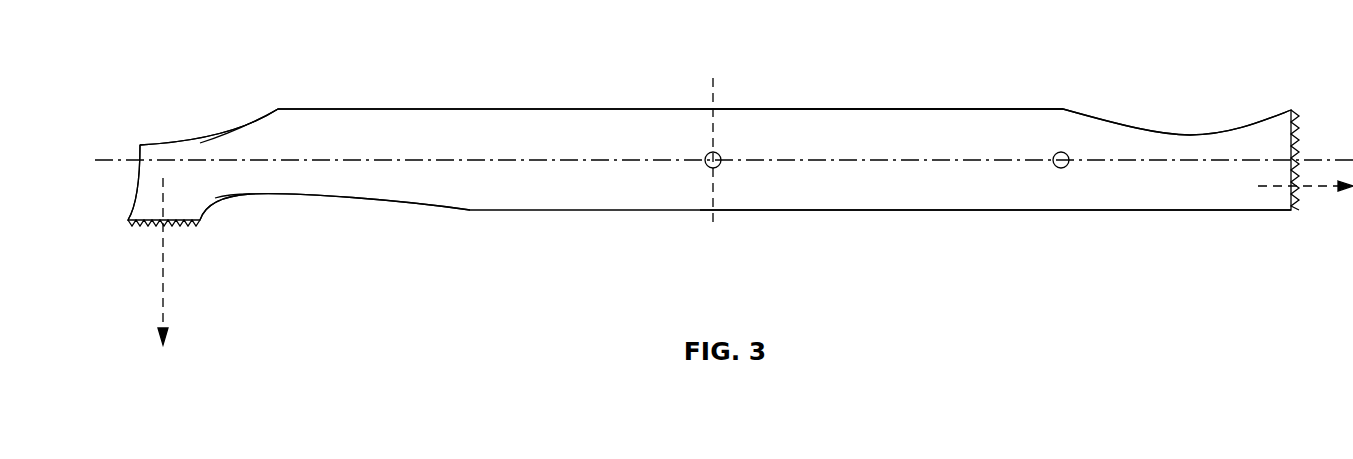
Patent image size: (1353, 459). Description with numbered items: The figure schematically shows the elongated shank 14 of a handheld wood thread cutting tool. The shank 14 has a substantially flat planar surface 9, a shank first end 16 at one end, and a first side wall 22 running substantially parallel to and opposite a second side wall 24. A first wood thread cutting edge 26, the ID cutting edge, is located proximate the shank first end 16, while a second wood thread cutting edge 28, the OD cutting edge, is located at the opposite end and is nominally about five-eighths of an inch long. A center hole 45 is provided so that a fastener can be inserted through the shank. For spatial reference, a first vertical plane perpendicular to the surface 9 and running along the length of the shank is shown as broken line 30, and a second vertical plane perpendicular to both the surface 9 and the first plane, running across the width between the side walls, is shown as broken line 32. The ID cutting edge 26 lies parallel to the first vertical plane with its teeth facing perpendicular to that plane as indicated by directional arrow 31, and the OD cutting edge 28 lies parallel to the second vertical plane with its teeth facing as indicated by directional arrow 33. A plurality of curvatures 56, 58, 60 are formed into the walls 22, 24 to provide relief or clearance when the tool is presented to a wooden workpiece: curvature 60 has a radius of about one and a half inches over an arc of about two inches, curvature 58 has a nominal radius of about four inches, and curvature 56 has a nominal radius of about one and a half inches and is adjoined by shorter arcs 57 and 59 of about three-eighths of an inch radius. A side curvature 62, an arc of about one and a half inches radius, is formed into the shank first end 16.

The planar surface 9 is at (553, 194).
The elongated shank 14 is at (327, 109).
The shank first end 16 is at (156, 145).
The first side wall 22 is at (958, 109).
The second side wall 24 is at (1030, 210).
The first wood thread cutting edge 26 is at (143, 223).
The second wood thread cutting edge 28 is at (1302, 127).
The first vertical plane 30 is at (415, 158).
The directional arrow 31 is at (165, 238).
The second vertical plane 32 is at (713, 125).
The directional arrow 33 is at (1280, 186).
The center hole 45 is at (720, 163).
The curvature 56 is at (298, 195).
The shorter arc 57 is at (210, 210).
The curvature 58 is at (232, 130).
The shorter arc 59 is at (223, 202).
The curvature 60 is at (1180, 132).
The side curvature 62 is at (137, 167).